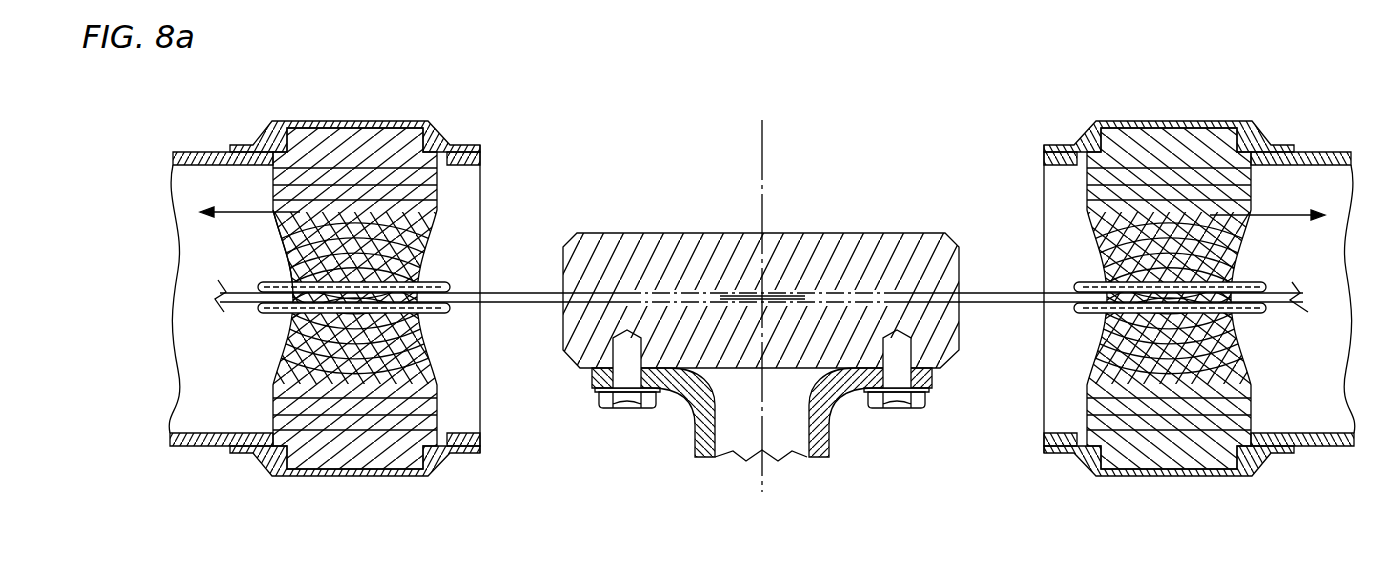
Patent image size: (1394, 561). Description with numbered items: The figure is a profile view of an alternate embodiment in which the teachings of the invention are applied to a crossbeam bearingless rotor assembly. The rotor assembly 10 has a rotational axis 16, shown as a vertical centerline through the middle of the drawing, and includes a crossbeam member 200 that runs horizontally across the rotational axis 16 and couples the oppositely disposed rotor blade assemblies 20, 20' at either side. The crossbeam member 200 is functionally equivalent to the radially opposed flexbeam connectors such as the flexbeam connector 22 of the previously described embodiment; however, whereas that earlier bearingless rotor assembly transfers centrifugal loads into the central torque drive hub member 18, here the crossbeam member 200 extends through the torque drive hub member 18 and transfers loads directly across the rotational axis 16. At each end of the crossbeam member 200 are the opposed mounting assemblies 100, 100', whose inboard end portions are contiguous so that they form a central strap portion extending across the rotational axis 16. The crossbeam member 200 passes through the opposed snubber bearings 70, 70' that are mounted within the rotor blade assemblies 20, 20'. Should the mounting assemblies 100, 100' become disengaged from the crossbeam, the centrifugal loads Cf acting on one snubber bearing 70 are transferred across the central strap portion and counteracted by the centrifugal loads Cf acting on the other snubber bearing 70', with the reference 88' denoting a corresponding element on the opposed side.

The rotor assembly 10 is at (955, 133).
The rotational axis 16 is at (762, 132).
The torque drive hub member 18 is at (818, 253).
The rotor blade assembly 20 is at (1218, 282).
The rotor blade assembly 20' is at (322, 278).
The flexbeam connector 22 is at (1272, 302).
The snubber bearing 70 is at (1213, 298).
The snubber bearing 70' is at (317, 298).
The inner sleeve 88' is at (275, 254).
The mounting assembly 100 is at (1208, 284).
The mounting assembly 100' is at (316, 283).
The crossbeam member 200 is at (934, 300).